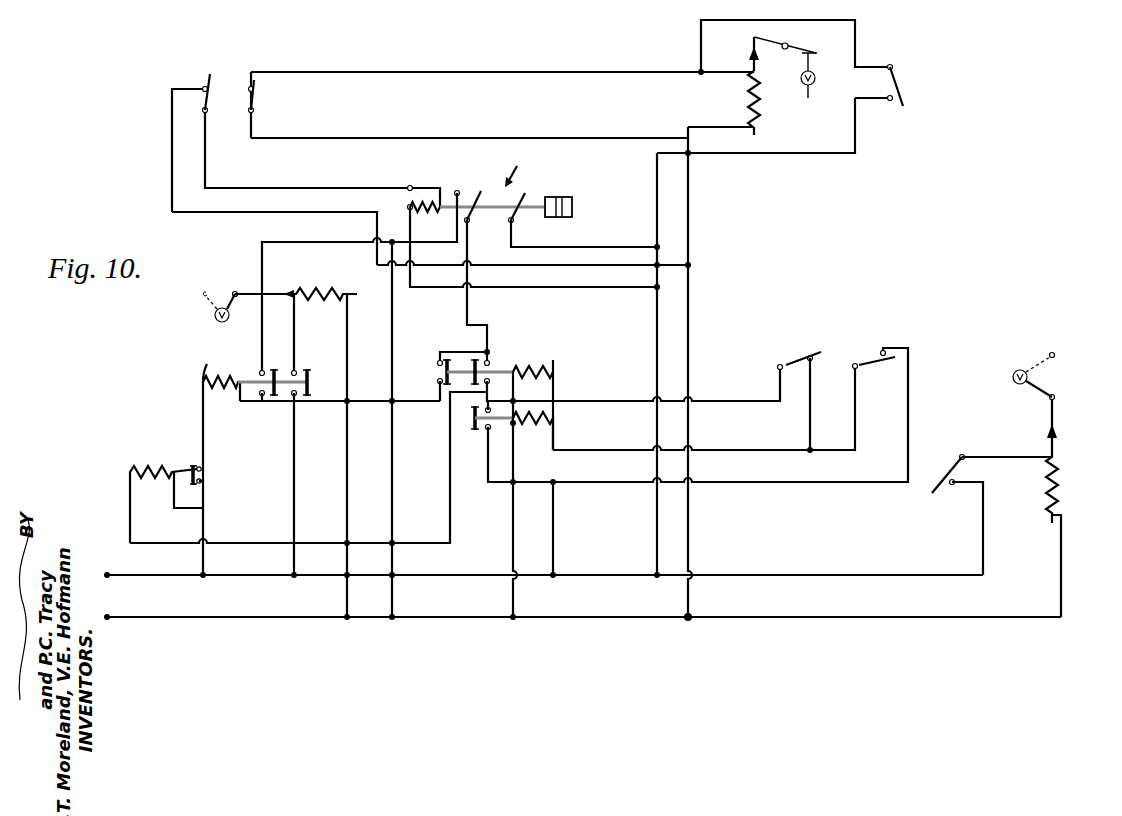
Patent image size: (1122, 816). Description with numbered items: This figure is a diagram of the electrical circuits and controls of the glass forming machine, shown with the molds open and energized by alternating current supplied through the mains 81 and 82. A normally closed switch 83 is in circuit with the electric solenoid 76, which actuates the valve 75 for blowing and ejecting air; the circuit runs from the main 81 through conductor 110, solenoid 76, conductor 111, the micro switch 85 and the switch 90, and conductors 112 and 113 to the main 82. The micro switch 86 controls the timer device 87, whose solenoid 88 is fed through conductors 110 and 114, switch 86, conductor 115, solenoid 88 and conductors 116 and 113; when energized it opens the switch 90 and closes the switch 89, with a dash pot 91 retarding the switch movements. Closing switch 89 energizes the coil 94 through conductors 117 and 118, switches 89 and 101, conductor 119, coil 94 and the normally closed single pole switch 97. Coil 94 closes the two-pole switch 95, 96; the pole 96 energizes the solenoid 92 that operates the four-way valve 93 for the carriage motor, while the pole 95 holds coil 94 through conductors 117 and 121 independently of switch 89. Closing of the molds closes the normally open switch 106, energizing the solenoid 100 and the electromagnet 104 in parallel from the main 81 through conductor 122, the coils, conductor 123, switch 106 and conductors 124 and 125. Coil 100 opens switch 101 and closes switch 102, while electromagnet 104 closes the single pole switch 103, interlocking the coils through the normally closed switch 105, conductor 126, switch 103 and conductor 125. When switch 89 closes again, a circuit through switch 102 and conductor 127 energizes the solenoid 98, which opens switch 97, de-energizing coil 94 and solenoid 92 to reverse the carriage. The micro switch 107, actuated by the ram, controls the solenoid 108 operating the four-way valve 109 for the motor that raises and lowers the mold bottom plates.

The valve 75 is at (806, 56).
The electric solenoid 76 is at (762, 104).
The main 81 is at (764, 615).
The main 82 is at (764, 575).
The switch 83 is at (905, 87).
The micro switch 85 is at (262, 107).
The micro switch 86 is at (213, 74).
The timer device 87 is at (517, 167).
The solenoid 88 is at (423, 202).
The switch 89 is at (474, 192).
The switch 90 is at (516, 218).
The dash pot 91 is at (560, 197).
The solenoid 92 is at (317, 292).
The four-way valve 93 is at (224, 294).
The coil 94 is at (207, 364).
The two-pole switch pole 95 is at (267, 406).
The two-pole switch pole 96 is at (302, 370).
The single pole switch 97 is at (210, 474).
The solenoid 98 is at (136, 470).
The solenoid 100 is at (541, 368).
The switch 101 is at (442, 371).
The switch 102 is at (482, 364).
The single pole switch 103 is at (473, 430).
The electromagnet 104 is at (548, 418).
The switch 105 is at (796, 360).
The switch 106 is at (869, 362).
The micro switch 107 is at (947, 463).
The solenoid 108 is at (1046, 488).
The four-way valve 109 is at (1032, 386).
The conductor 110 is at (690, 311).
The conductor 111 is at (641, 72).
The conductor 112 is at (597, 247).
The conductor 113 is at (653, 313).
The conductor 114 is at (563, 265).
The conductor 115 is at (310, 190).
The conductor 116 is at (503, 288).
The conductor 117 is at (394, 319).
The conductor 118 is at (428, 246).
The conductor 119 is at (318, 405).
The conductor 121 is at (286, 243).
The conductor 122 is at (510, 543).
The conductor 123 is at (718, 455).
The conductor 124 is at (784, 482).
The conductor 125 is at (556, 529).
The conductor 126 is at (608, 401).
The conductor 127 is at (450, 515).